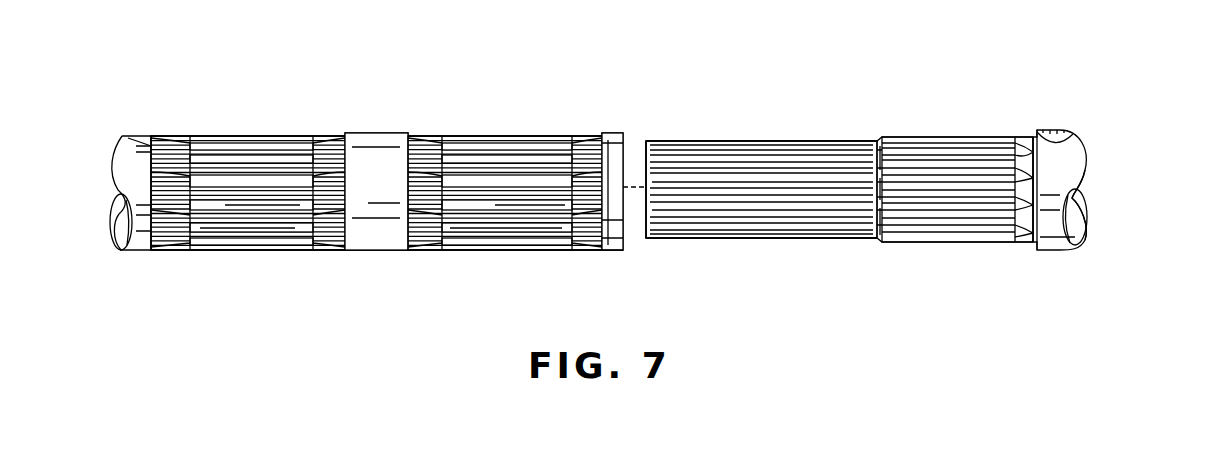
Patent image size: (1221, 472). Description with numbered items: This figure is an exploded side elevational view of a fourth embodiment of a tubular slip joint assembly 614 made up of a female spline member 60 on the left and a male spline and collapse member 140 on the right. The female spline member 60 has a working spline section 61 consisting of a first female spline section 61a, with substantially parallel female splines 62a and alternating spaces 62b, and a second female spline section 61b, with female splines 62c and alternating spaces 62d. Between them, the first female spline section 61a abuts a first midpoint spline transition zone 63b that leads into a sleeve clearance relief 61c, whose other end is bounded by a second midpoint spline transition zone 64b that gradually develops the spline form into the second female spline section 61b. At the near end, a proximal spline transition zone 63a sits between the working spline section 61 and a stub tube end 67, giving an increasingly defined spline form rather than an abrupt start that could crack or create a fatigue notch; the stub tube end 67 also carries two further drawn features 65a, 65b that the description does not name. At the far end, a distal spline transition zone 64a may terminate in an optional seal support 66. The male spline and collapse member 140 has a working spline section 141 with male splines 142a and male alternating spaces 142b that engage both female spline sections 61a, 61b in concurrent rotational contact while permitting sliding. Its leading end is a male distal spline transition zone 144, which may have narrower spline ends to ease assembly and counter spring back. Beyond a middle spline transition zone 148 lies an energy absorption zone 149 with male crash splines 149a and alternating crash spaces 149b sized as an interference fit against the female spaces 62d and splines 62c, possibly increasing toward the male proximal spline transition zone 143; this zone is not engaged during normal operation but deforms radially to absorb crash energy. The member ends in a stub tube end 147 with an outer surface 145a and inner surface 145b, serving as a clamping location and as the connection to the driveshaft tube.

The female spline member 60 is at (391, 110).
The working spline section 61 is at (570, 258).
The first female spline section 61a is at (218, 160).
The second female spline section 61b is at (541, 150).
The sleeve clearance relief 61c is at (370, 160).
The female splines 62a is at (248, 172).
The alternating spaces 62b is at (288, 182).
The female splines 62c is at (466, 185).
The alternating spaces 62d is at (505, 170).
The proximal spline transition zone 63a is at (173, 248).
The first midpoint spline transition zone 63b is at (335, 165).
The distal spline transition zone 64a is at (590, 150).
The second midpoint spline transition zone 64b is at (427, 150).
The left end cap upper portion 65a is at (140, 150).
The left end cap opening 65b is at (122, 217).
The seal support 66 is at (617, 250).
The stub tube end 67 is at (97, 155).
The slip joint assembly 614 is at (692, 72).
The male spline and collapse member 140 is at (864, 110).
The working spline section 141 is at (875, 247).
The male splines 142a is at (715, 152).
The male alternating spaces 142b is at (795, 160).
The male proximal spline transition zone 143 is at (1027, 247).
The male distal spline transition zone 144 is at (646, 258).
The outer surface 145a is at (1072, 153).
The inner surface 145b is at (1077, 212).
The stub tube end 147 is at (1116, 232).
The middle spline transition zone 148 is at (882, 247).
The energy absorption zone 149 is at (1017, 258).
The male crash splines 149a is at (928, 152).
The alternating crash spaces 149b is at (990, 160).